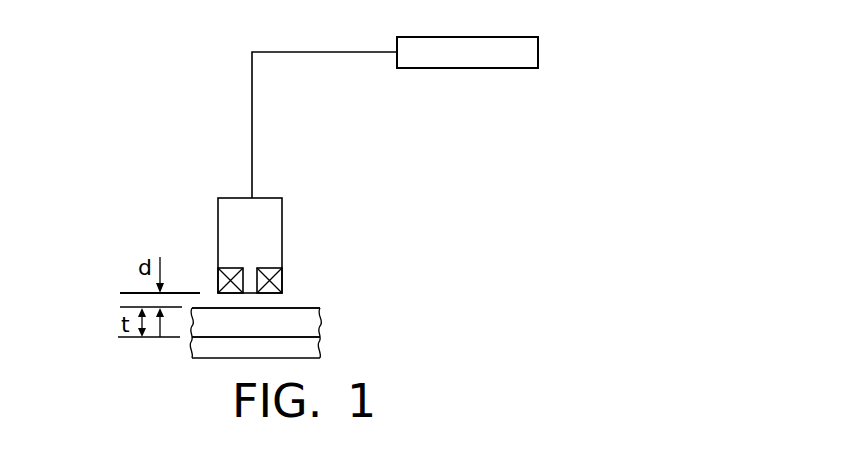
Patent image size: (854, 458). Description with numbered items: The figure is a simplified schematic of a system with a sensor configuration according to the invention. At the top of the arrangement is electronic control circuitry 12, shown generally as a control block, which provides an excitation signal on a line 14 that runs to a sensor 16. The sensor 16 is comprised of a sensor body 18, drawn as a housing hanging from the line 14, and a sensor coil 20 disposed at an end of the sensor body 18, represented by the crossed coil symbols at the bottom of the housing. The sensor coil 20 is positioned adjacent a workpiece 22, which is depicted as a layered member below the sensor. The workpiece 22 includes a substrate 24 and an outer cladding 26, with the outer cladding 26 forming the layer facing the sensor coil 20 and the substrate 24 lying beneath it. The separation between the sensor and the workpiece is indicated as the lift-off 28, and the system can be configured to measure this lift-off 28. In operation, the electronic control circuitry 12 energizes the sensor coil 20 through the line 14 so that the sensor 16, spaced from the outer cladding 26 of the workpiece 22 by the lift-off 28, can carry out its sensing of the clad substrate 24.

The electronic control circuitry 12 is at (453, 37).
The line 14 is at (252, 141).
The sensor 16 is at (259, 221).
The sensor body 18 is at (282, 207).
The sensor coil 20 is at (265, 268).
The workpiece 22 is at (257, 350).
The substrate 24 is at (310, 348).
The outer cladding 26 is at (293, 313).
The lift-off 28 is at (116, 306).